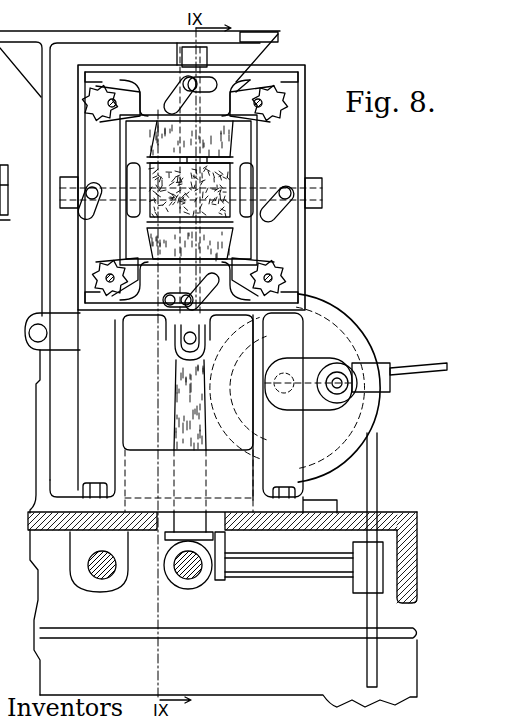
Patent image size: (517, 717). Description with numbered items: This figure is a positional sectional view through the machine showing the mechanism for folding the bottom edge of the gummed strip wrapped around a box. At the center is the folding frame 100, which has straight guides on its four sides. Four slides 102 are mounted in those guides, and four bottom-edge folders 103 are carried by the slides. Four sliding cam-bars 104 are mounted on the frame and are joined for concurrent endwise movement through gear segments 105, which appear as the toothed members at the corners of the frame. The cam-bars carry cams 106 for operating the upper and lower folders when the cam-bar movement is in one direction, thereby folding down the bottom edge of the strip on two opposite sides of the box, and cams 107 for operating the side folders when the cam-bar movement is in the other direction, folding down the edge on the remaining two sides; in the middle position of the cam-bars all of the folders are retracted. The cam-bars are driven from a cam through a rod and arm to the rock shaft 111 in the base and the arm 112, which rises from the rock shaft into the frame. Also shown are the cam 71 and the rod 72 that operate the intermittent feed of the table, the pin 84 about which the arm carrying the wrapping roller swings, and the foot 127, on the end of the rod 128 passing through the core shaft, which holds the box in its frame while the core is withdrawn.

The cam 71 is at (342, 325).
The rod 72 is at (421, 368).
The pin 84 is at (37, 333).
The folding frame 100 is at (313, 72).
The slide 102 is at (317, 180).
The bottom-edge folder 103 is at (158, 125).
The sliding cam-bar 104 is at (250, 80).
The gear segment 105 is at (290, 108).
The cam 106 is at (181, 97).
The cam 107 is at (284, 210).
The rock shaft 111 is at (195, 580).
The arm 112 is at (174, 400).
The foot 127 is at (7, 183).
The rod 128 is at (12, 233).